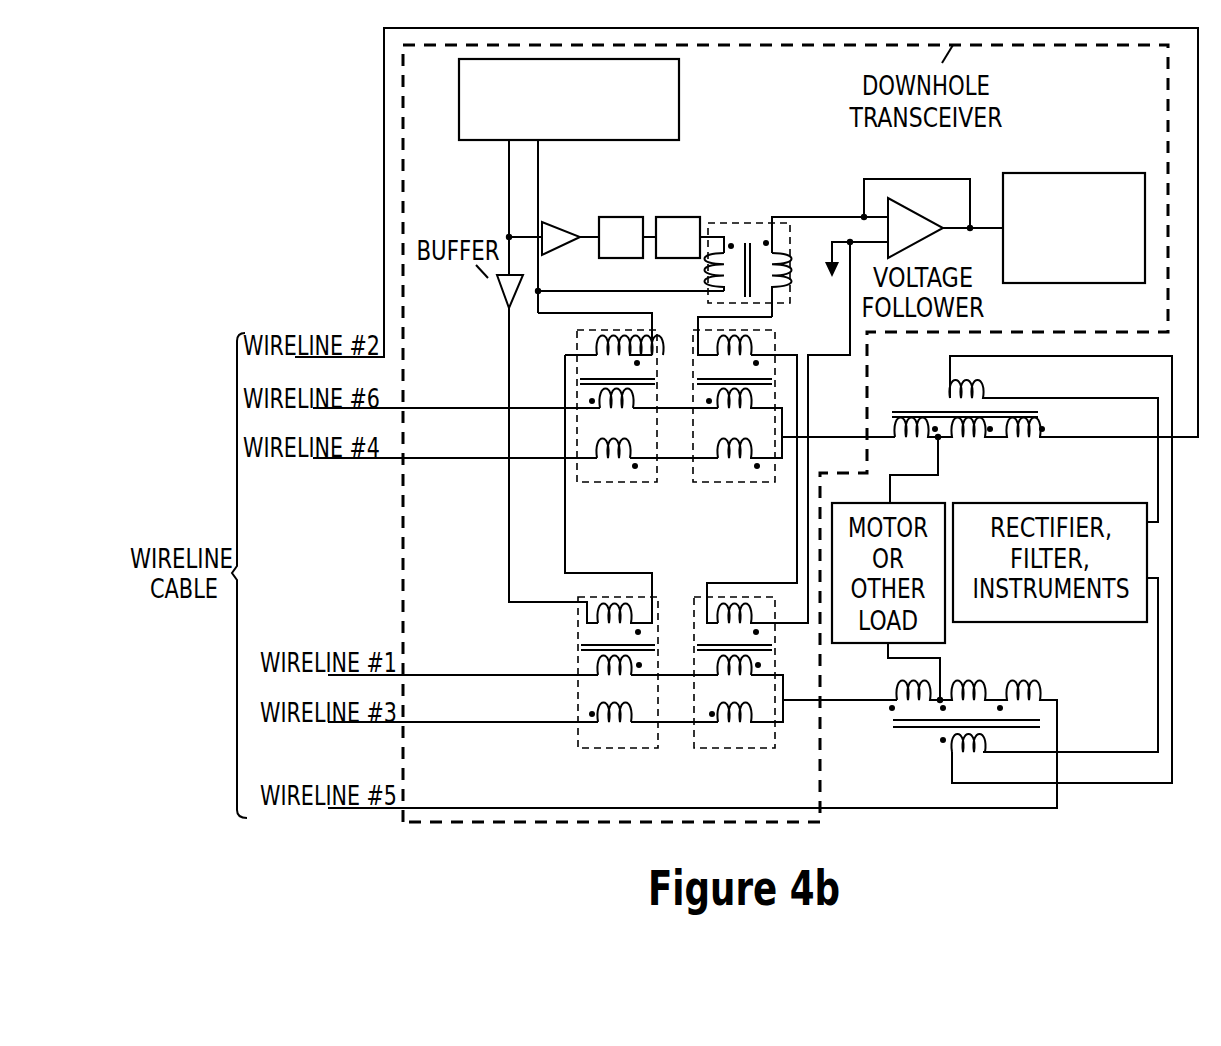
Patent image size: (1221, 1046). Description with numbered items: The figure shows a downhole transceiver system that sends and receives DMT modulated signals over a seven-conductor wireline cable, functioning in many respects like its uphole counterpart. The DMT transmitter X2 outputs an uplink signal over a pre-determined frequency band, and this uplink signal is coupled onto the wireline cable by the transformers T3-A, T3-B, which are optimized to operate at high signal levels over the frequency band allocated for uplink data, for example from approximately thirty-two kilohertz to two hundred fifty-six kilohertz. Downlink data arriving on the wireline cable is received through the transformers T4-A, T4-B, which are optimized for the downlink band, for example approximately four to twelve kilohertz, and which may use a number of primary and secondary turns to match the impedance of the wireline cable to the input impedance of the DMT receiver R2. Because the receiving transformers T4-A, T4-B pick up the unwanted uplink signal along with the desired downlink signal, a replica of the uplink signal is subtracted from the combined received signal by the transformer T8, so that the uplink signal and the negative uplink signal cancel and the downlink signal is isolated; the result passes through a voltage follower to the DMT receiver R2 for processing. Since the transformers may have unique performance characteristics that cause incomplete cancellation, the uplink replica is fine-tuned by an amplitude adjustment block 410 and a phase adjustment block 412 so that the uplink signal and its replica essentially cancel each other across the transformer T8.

The amplitude adjustment block 410 is at (620, 217).
The phase adjustment block 412 is at (677, 217).
The transformer T8 is at (748, 222).
The transformer T3-A is at (637, 485).
The transformer T4-A is at (748, 485).
The transformer T3-B is at (627, 750).
The transformer T4-B is at (747, 750).
The DMT transmitter X2 is at (569, 99).
The DMT receiver R2 is at (1074, 228).